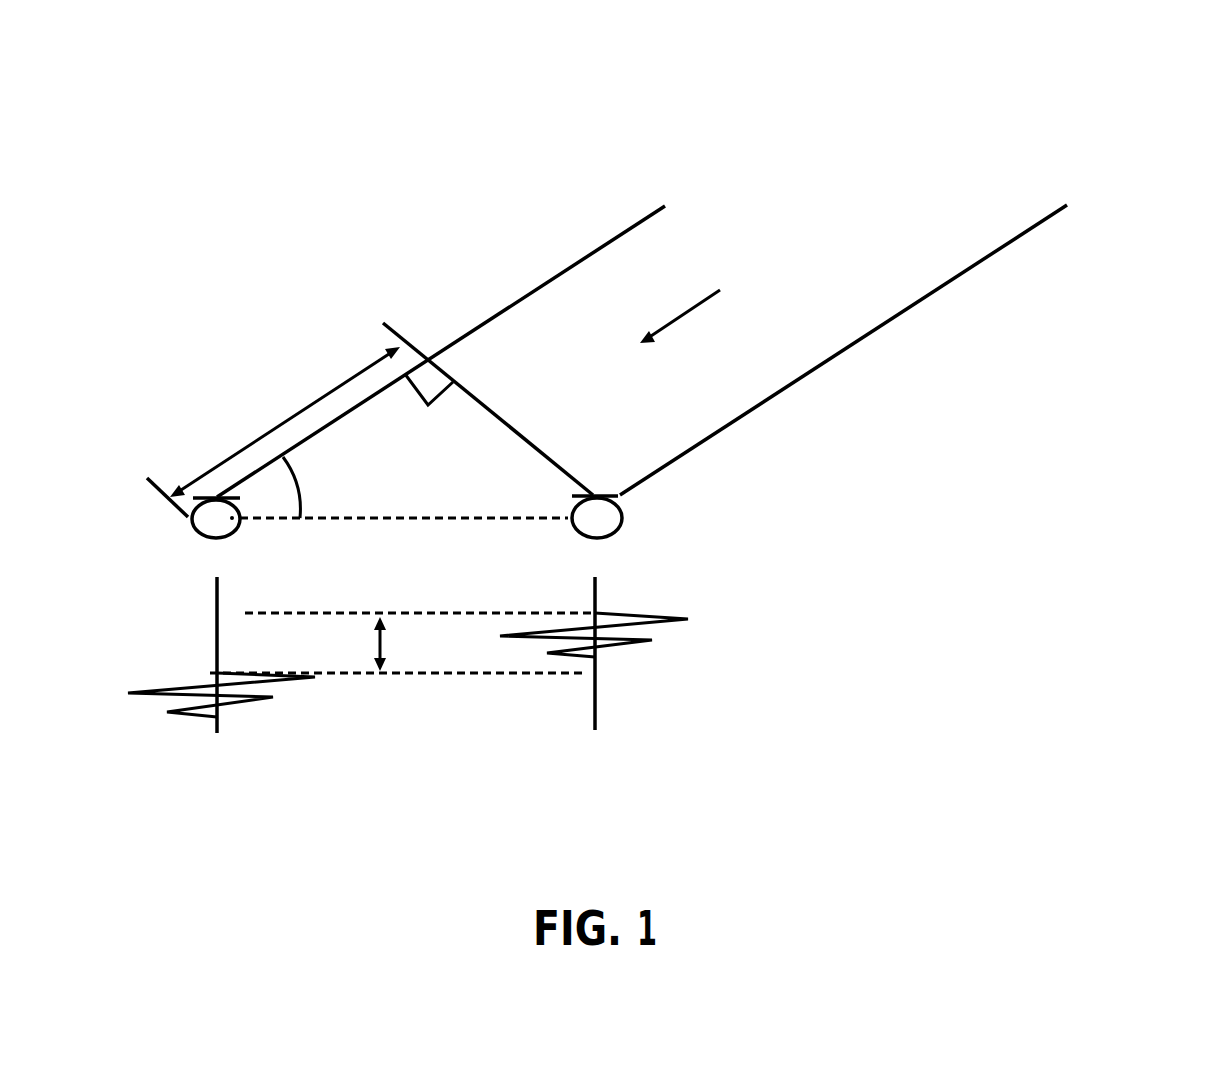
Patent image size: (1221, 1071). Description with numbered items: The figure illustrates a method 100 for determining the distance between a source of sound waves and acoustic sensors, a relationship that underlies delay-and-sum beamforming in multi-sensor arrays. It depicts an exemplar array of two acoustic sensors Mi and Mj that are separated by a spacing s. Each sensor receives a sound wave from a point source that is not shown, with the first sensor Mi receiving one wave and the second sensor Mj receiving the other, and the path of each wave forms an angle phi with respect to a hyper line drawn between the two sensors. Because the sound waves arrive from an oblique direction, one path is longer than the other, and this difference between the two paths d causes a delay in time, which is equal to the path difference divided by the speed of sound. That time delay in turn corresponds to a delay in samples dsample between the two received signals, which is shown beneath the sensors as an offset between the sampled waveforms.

The method 100 is at (1106, 66).
The acoustic sensor Mi is at (200, 527).
The acoustic sensor Mj is at (612, 524).
The path difference d is at (285, 422).
The spacing s is at (404, 540).
The angle phi is at (308, 487).
The delay in samples dsample is at (429, 644).